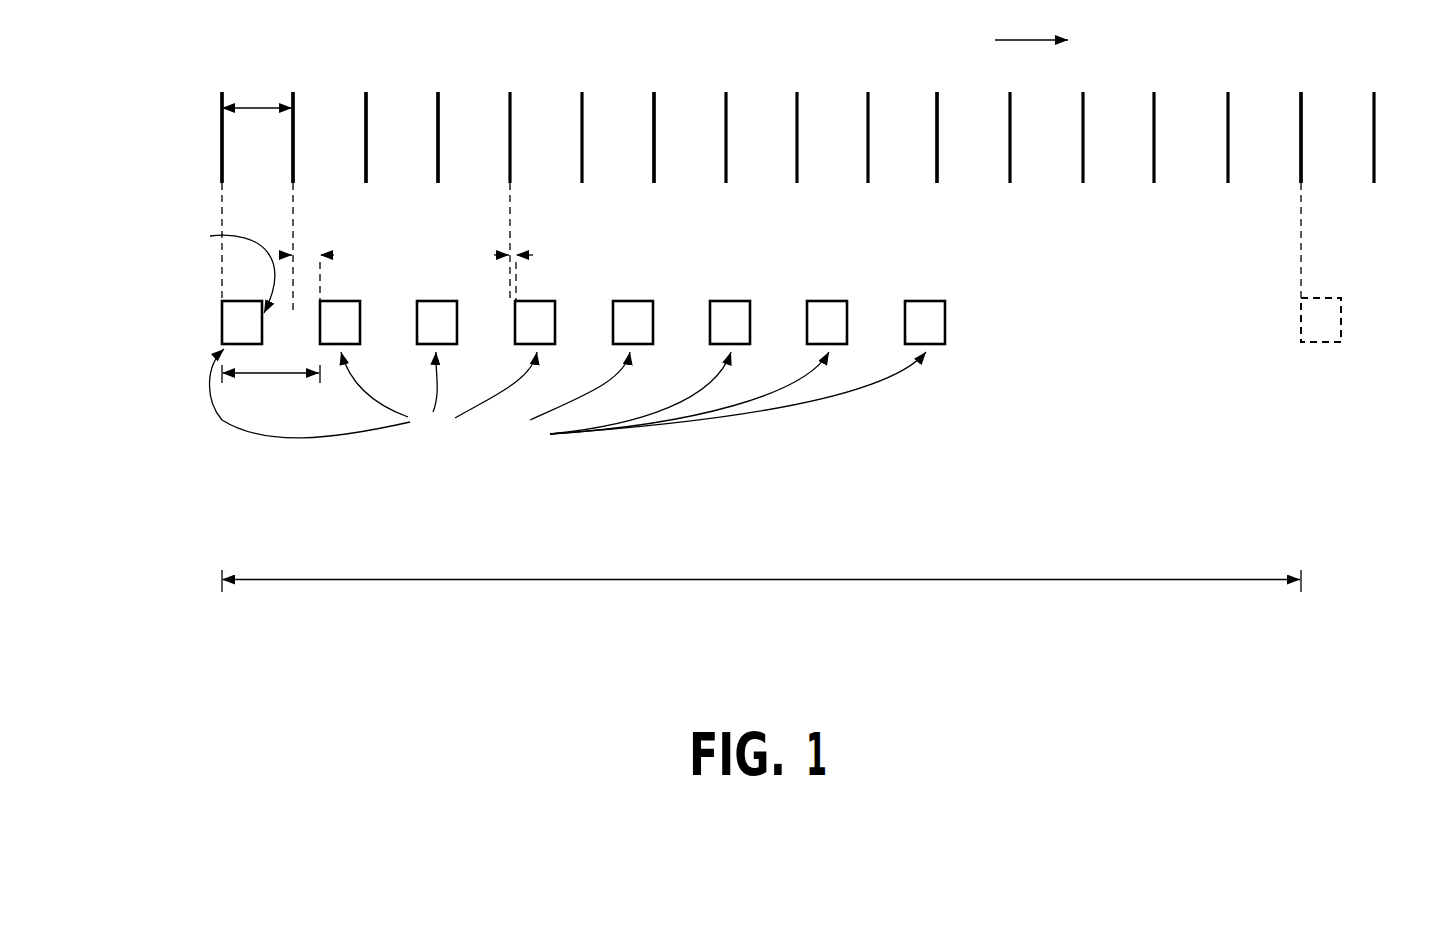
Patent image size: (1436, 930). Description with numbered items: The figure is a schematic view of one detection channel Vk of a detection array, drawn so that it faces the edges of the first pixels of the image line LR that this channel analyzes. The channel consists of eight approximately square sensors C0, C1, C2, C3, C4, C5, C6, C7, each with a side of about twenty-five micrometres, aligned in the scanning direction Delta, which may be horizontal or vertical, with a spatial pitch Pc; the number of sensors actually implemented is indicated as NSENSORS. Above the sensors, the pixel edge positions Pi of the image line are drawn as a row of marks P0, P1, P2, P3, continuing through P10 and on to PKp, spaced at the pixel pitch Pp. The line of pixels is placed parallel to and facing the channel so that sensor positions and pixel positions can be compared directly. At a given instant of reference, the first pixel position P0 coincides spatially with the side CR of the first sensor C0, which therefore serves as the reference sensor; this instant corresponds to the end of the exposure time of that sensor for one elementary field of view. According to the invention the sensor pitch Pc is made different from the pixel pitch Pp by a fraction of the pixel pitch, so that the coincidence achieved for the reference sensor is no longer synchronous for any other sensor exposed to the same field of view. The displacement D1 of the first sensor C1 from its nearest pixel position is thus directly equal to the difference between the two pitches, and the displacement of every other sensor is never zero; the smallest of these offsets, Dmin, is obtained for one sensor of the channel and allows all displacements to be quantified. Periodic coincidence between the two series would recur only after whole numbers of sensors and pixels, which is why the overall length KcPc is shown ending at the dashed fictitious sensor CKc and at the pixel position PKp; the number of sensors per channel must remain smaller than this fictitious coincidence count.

The scanning direction Delta is at (1031, 30).
The image line LR is at (214, 148).
The pixel pitch Pp is at (257, 88).
The position of the first pixel P0 is at (223, 158).
The position of the second pixel P1 is at (294, 158).
The position of the third pixel P2 is at (367, 158).
The position of the fourth pixel P3 is at (439, 158).
The pixel edge positions Pi is at (655, 158).
The position of the eleventh pixel P10 is at (938, 158).
The position of the Kp-th pixel PKp is at (1302, 158).
The displacement of the first sensor D1 is at (307, 242).
The minimum displacement Dmin is at (527, 241).
The reference side of the first sensor CR is at (230, 268).
The detection channel Vk is at (214, 327).
The reference sensor C0 is at (222, 312).
The first sensor C1 is at (360, 317).
The second sensor C2 is at (457, 317).
The third sensor C3 is at (555, 317).
The fourth sensor C4 is at (653, 317).
The fifth sensor C5 is at (750, 317).
The sixth sensor C6 is at (847, 317).
The seventh sensor C7 is at (945, 317).
The fictitious Kc-th sensor CKc is at (1341, 305).
The sensor pitch Pc is at (271, 390).
The number of sensors NSENSORS is at (567, 400).
The coincidence length KcPc is at (761, 597).